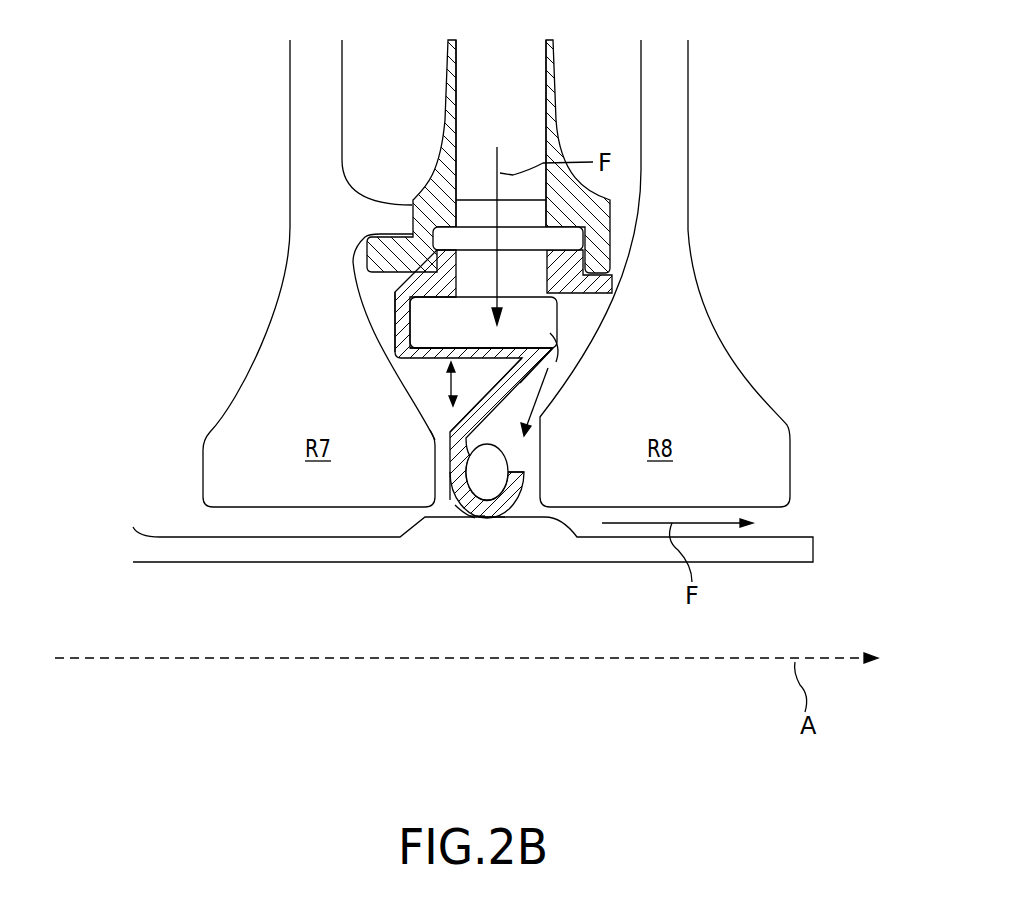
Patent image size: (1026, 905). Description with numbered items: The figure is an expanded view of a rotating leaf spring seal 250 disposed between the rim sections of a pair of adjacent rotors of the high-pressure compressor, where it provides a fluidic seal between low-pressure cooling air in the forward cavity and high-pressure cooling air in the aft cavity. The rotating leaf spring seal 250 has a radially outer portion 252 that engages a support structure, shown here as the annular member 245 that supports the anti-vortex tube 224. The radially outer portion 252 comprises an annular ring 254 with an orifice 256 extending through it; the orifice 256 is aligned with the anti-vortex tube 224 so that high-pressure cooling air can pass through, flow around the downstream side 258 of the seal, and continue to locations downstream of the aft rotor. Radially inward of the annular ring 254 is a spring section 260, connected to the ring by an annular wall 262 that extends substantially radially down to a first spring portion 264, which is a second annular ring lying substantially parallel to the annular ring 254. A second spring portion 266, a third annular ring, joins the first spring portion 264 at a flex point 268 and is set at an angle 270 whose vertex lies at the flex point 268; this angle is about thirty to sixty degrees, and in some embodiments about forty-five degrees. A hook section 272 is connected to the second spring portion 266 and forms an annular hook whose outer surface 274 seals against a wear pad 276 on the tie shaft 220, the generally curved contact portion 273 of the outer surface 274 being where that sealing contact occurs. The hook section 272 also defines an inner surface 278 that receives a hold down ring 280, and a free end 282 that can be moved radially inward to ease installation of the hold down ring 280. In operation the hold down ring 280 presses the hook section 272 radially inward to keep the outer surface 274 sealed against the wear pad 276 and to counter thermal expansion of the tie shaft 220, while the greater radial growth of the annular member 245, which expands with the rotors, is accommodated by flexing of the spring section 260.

The tie shaft 220 is at (517, 550).
The anti-vortex tube 224 is at (558, 114).
The annular member 245 is at (365, 262).
The rotating leaf spring seal 250 is at (380, 316).
The radially outer portion 252 is at (570, 282).
The annular ring 254 is at (553, 287).
The orifice 256 is at (520, 268).
The downstream side 258 is at (410, 352).
The spring section 260 is at (440, 414).
The annular wall 262 is at (397, 338).
The first spring portion 264 is at (458, 352).
The second spring portion 266 is at (520, 388).
The flex point 268 is at (553, 353).
The angle 270 is at (445, 382).
The hook section 272 is at (458, 510).
The contact portion 273 is at (483, 518).
The outer surface 274 is at (477, 518).
The wear pad 276 is at (447, 530).
The inner surface 278 is at (492, 518).
The hold down ring 280 is at (480, 465).
The free end 282 is at (533, 483).